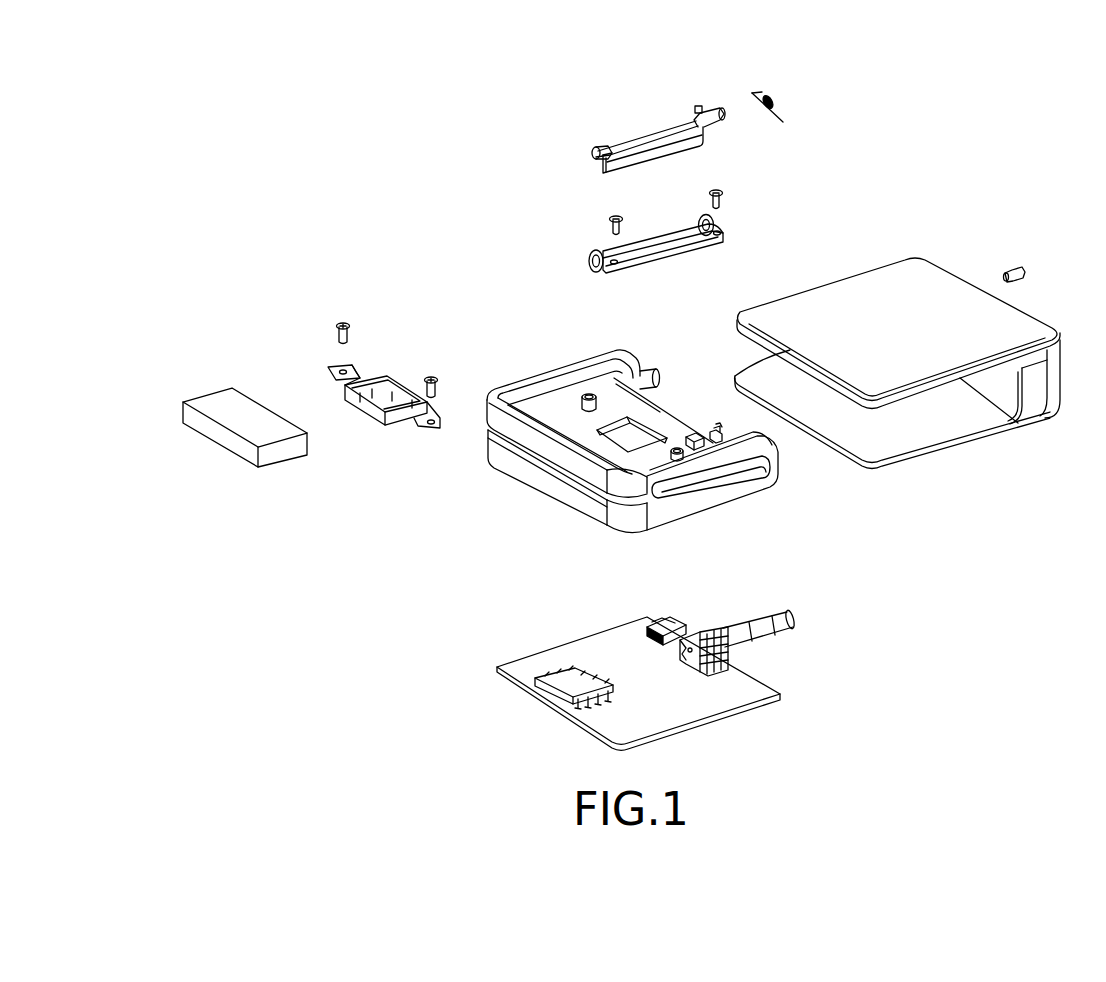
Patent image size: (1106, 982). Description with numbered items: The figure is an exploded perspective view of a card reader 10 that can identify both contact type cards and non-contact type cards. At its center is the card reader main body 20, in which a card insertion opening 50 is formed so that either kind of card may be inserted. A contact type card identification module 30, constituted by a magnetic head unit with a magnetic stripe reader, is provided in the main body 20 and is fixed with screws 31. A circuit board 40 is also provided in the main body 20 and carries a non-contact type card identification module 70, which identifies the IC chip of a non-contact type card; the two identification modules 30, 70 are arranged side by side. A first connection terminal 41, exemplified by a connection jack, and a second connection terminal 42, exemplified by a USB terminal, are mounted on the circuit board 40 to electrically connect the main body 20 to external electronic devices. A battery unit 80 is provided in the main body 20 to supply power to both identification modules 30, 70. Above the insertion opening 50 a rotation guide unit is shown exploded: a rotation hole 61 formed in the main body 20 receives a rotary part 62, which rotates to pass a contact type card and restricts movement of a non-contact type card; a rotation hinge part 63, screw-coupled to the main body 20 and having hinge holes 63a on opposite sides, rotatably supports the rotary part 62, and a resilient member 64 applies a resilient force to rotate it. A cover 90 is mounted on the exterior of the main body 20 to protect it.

The card reader 10 is at (1027, 132).
The card reader main body 20 is at (768, 485).
The contact type card identification module 30 is at (372, 424).
The fastening screws 31 is at (430, 374).
The circuit board 40 is at (744, 704).
The first connection terminal 41 is at (797, 625).
The second connection terminal 42 is at (678, 618).
The card insertion opening 50 is at (698, 488).
The rotation hole 61 is at (688, 440).
The rotary part 62 is at (603, 149).
The rotation hinge part 63 is at (671, 259).
The hinge holes 63a is at (716, 224).
The resilient member 64 is at (785, 97).
The non-contact type card identification module 70 is at (558, 668).
The battery unit 80 is at (237, 448).
The cover 90 is at (940, 270).